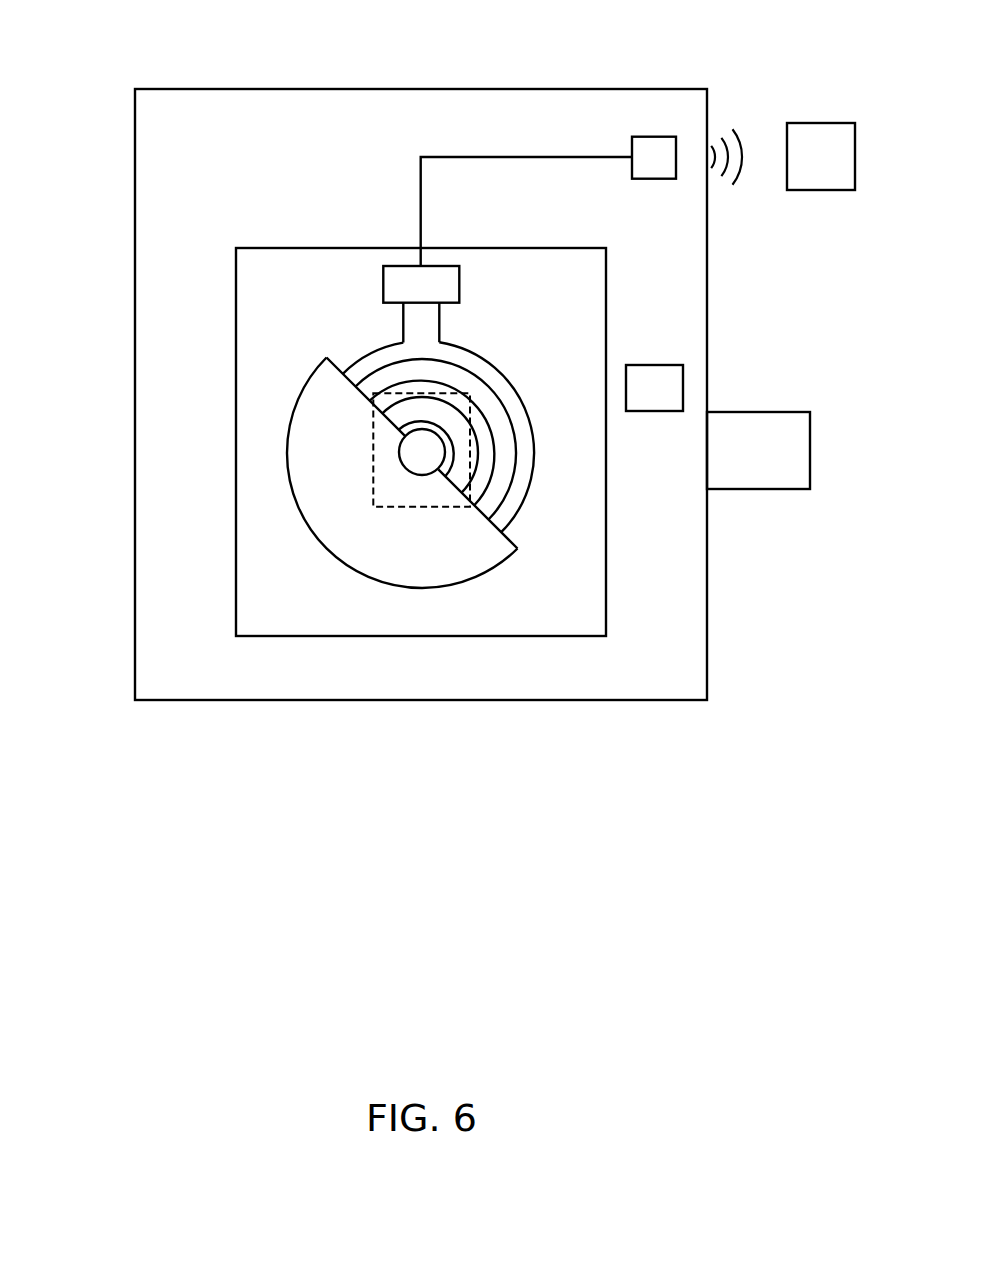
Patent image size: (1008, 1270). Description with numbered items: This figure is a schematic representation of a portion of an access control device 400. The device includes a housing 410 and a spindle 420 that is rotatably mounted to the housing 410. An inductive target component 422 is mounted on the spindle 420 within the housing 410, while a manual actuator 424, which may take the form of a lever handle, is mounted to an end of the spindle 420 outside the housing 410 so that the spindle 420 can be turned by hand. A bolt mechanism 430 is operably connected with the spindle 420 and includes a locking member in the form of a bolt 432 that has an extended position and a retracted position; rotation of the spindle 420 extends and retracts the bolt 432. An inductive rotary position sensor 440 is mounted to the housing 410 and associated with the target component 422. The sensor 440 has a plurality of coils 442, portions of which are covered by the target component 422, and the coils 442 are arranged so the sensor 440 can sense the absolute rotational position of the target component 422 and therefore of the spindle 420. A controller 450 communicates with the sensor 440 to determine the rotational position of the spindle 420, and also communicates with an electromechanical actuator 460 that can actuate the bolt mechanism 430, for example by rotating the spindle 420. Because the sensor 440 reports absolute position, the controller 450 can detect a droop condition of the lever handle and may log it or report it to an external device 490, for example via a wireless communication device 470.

The access control device 400 is at (266, 48).
The housing 410 is at (135, 138).
The spindle 420 is at (399, 450).
The inductive target component 422 is at (518, 550).
The manual actuator 424 is at (420, 508).
The bolt mechanism 430 is at (767, 309).
The bolt 432 is at (800, 411).
The inductive rotary position sensor 440 is at (463, 406).
The coils 442 is at (512, 378).
The controller 450 is at (447, 266).
The electromechanical actuator 460 is at (662, 365).
The wireless communication device 470 is at (632, 140).
The external device 490 is at (833, 123).